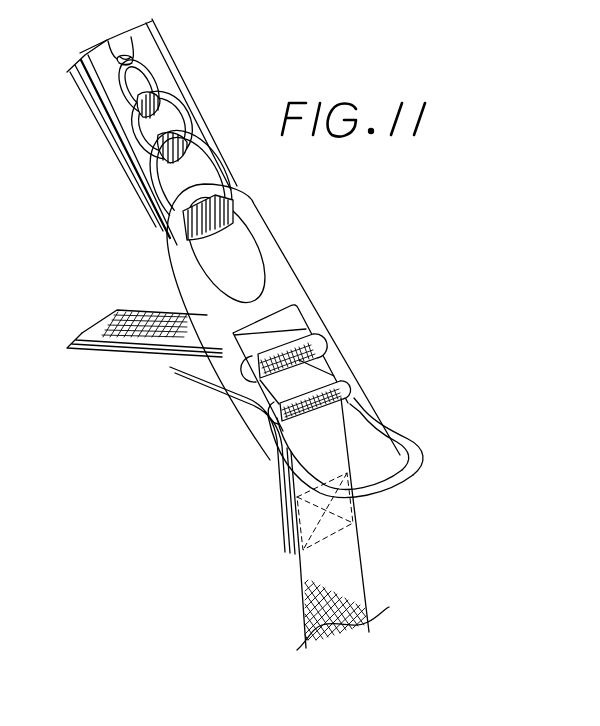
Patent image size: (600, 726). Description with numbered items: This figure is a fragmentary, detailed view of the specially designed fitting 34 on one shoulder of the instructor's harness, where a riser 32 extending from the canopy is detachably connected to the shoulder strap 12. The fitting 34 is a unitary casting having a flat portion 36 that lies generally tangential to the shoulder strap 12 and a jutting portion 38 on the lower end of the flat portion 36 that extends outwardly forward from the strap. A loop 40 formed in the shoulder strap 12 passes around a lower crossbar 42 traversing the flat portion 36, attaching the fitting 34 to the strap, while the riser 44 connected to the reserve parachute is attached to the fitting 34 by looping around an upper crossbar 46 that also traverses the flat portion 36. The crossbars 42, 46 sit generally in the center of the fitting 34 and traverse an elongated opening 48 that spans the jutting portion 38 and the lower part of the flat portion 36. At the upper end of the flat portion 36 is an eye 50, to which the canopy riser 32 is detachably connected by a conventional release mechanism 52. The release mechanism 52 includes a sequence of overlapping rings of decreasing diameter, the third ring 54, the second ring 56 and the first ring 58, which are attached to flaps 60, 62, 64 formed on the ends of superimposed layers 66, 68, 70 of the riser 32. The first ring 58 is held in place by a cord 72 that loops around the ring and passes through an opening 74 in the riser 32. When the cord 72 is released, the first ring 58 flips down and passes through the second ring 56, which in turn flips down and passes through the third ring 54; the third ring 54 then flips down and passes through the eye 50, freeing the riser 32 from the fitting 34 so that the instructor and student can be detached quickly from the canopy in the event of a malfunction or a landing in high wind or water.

The shoulder strap 12 is at (207, 370).
The riser 32 is at (76, 55).
The fitting 34 is at (347, 322).
The flat portion 36 is at (207, 315).
The jutting portion 38 is at (411, 487).
The loop 40 is at (327, 378).
The lower crossbar 42 is at (273, 413).
The riser 44 is at (112, 322).
The upper crossbar 46 is at (247, 372).
The elongated opening 48 is at (356, 441).
The eye 50 is at (258, 228).
The release mechanism 52 is at (210, 116).
The third ring 54 is at (153, 200).
The second ring 56 is at (124, 147).
The first ring 58 is at (157, 63).
The flap 60 is at (233, 218).
The flap 62 is at (193, 147).
The flap 64 is at (152, 98).
The layer 66 is at (138, 172).
The layer 68 is at (137, 133).
The layer 70 is at (100, 72).
The cord 72 is at (123, 33).
The opening 74 is at (108, 41).